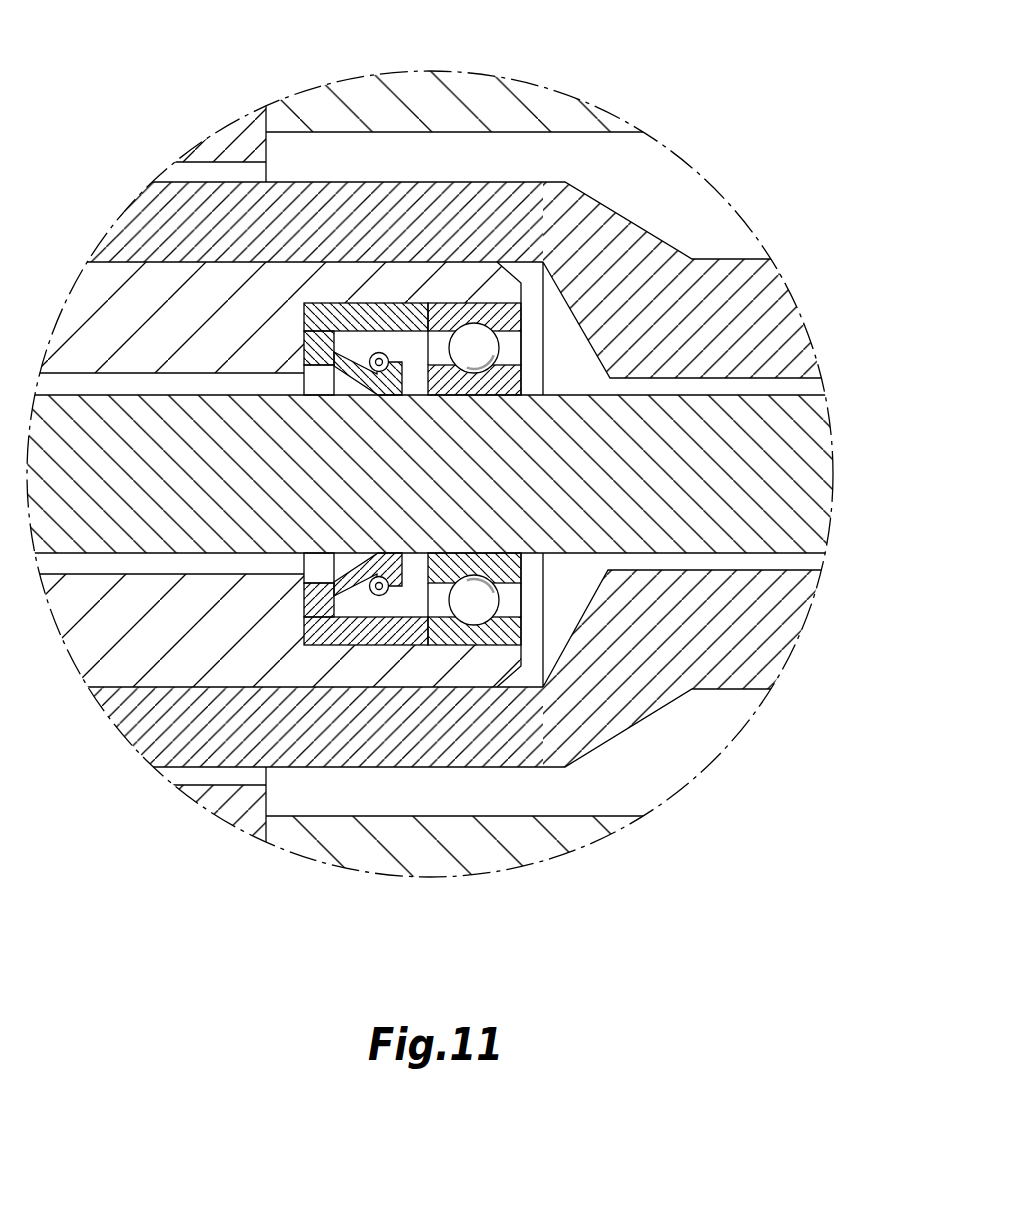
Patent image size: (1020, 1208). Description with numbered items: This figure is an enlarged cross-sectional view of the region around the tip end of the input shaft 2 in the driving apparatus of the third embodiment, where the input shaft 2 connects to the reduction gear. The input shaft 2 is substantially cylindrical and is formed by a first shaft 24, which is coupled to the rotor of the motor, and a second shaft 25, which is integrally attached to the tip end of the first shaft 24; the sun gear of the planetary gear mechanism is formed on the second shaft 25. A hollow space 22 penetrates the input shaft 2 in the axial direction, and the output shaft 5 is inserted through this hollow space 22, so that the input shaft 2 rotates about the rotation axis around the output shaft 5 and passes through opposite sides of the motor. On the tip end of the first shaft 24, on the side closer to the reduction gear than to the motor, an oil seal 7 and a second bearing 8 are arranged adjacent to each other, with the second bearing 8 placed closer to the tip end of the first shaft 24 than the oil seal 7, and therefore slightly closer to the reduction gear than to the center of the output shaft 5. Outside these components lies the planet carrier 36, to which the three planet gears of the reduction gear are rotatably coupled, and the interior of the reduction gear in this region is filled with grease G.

The input shaft 2 is at (450, 587).
The output shaft 5 is at (732, 493).
The oil seal 7 is at (360, 318).
The second bearing 8 is at (452, 315).
The hollow space 22 is at (725, 388).
The first shaft 24 is at (198, 632).
The second shaft 25 is at (332, 727).
The planet carrier 36 is at (494, 108).
The grease G is at (655, 187).